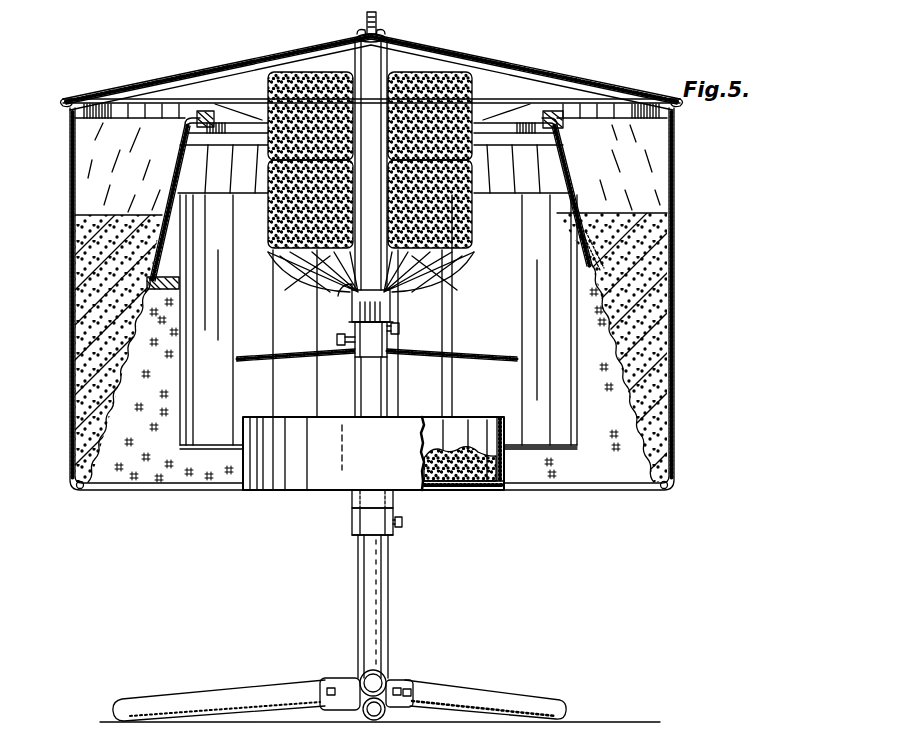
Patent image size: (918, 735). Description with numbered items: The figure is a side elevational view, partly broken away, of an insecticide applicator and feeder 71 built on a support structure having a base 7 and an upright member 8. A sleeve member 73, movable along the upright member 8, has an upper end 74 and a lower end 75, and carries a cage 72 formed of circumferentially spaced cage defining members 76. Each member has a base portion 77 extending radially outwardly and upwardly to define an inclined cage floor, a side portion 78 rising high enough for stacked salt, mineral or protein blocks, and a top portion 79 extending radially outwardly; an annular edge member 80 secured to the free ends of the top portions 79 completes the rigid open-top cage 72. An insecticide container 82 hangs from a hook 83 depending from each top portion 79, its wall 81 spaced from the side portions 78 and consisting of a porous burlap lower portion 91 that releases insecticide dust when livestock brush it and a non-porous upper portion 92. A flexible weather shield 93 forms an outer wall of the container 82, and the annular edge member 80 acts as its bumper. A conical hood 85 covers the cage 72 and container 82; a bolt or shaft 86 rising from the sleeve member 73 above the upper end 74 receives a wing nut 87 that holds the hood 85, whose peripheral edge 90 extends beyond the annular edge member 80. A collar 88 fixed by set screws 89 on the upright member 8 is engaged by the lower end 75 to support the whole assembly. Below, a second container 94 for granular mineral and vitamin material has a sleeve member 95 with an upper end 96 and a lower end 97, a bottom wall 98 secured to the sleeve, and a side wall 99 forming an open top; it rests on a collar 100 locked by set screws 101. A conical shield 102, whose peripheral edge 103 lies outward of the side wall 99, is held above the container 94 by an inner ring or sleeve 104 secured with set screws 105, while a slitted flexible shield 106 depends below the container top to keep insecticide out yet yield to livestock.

The base 7 is at (483, 670).
The upright member 8 is at (390, 610).
The insecticide applicator and feeder 71 is at (727, 186).
The cage 72 is at (262, 240).
The sleeve member 73 is at (390, 298).
The upper end 74 is at (335, 292).
The lower end 75 is at (358, 326).
The cage defining members 76 is at (290, 270).
The base portion 77 is at (452, 268).
The side portion 78 is at (478, 216).
The top portion 79 is at (173, 123).
The annular edge member 80 is at (95, 124).
The wall 81 is at (160, 259).
The insecticide container 82 is at (80, 283).
The hook 83 is at (561, 142).
The hood 85 is at (549, 68).
The bolt or shaft 86 is at (378, 16).
The wing nut 87 is at (356, 33).
The collar 88 is at (353, 330).
The set screws 89 is at (400, 327).
The peripheral edge 90 is at (63, 104).
The lower portion 91 is at (633, 407).
The upper portion 92 is at (592, 243).
The weather shield 93 is at (74, 365).
The container 94 is at (318, 479).
The sleeve member 95 is at (394, 502).
The upper end 96 is at (390, 475).
The lower end 97 is at (360, 514).
The bottom wall 98 is at (490, 488).
The side wall 99 is at (510, 434).
The collar 100 is at (395, 538).
The set screws 101 is at (408, 523).
The shield 102 is at (518, 357).
The peripheral edge 103 is at (238, 363).
The inner ring or sleeve 104 is at (364, 352).
The set screws 105 is at (340, 341).
The flexible shield 106 is at (566, 448).